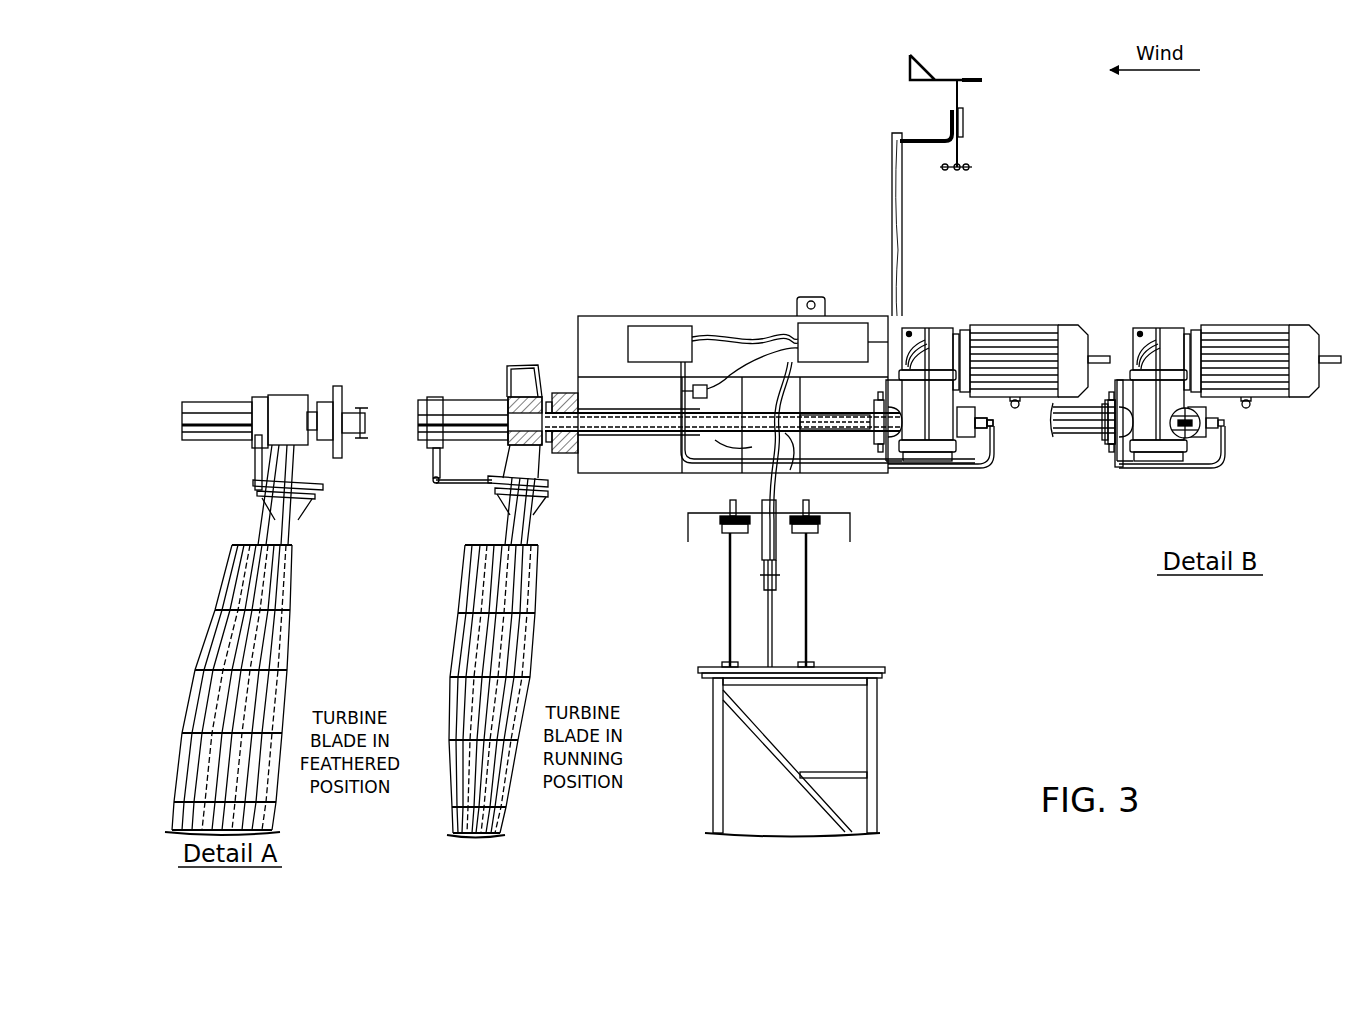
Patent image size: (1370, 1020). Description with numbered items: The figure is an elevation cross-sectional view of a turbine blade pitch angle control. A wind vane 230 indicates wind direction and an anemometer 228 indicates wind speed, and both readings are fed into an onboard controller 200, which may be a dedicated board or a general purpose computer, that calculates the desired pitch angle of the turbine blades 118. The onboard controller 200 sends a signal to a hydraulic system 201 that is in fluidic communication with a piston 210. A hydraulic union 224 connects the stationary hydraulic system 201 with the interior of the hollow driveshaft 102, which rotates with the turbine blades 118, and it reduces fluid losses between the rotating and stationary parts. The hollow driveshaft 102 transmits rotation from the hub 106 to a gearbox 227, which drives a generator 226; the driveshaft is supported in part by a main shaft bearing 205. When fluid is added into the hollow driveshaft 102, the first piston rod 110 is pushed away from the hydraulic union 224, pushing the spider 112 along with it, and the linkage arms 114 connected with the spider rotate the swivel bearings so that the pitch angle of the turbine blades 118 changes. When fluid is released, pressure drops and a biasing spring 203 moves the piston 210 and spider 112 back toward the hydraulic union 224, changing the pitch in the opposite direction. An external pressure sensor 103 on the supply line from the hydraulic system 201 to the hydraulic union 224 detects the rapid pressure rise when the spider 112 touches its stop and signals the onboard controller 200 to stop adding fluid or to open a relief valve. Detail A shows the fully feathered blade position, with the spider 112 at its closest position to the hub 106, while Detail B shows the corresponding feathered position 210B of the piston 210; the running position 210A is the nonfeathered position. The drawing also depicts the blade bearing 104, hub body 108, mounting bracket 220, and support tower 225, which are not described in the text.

The hollow driveshaft 102 is at (640, 411).
The external pressure sensor 103 is at (700, 384).
The blade pitch bearing 104 is at (522, 490).
The hub 106 is at (527, 397).
The hub 108 is at (501, 398).
The first piston rod 110 is at (470, 418).
The spider 112 is at (435, 414).
The linkage arms 114 is at (466, 489).
The turbine blades 118 is at (448, 677).
The onboard controller 200 is at (840, 330).
The hydraulic system 201 is at (676, 336).
The biasing spring 203 is at (620, 410).
The main shaft bearing 205 is at (562, 402).
The piston 210 is at (640, 434).
The running position 210A is at (805, 432).
The feathered position 210B is at (1186, 432).
The mounting bracket 220 is at (834, 518).
The hydraulic union 224 is at (985, 430).
The support tower 225 is at (853, 747).
The generator 226 is at (1022, 325).
The gearbox 227 is at (930, 327).
The anemometer 228 is at (978, 167).
The wind vane 230 is at (930, 75).